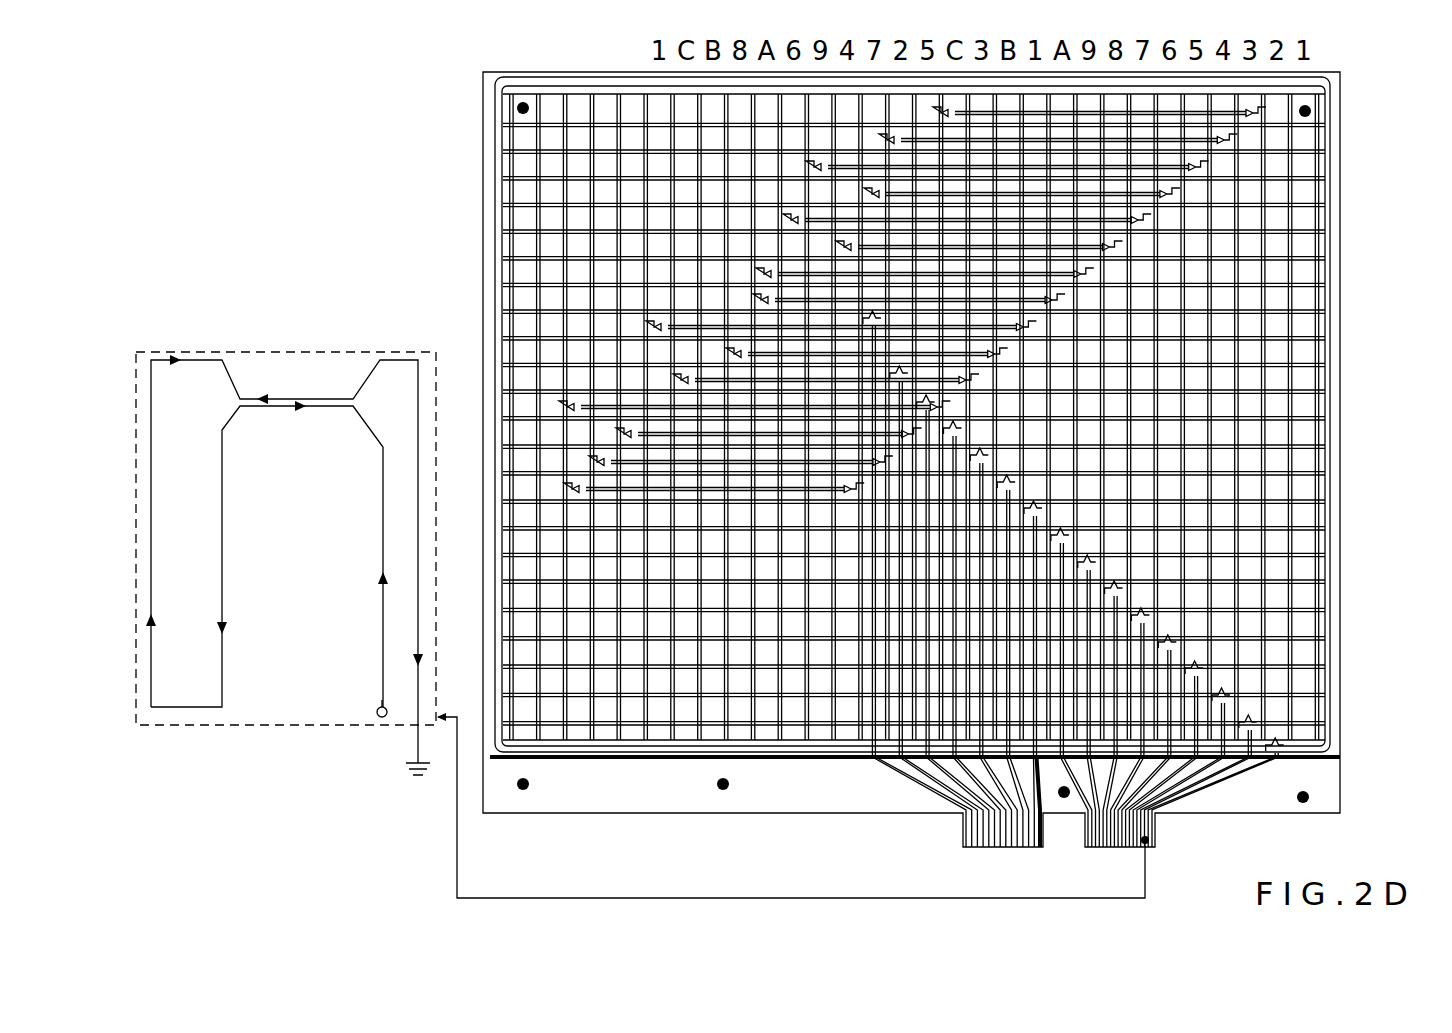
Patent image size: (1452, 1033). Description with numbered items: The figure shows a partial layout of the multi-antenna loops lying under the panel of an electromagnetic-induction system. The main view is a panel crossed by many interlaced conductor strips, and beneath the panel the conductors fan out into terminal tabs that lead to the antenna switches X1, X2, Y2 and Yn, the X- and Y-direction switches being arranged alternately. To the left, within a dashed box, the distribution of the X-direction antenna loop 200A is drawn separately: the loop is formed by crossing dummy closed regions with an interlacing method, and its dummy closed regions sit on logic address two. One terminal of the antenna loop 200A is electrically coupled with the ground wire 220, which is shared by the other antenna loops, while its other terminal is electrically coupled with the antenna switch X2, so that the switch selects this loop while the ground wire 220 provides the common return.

The antenna loop 200A is at (383, 542).
The ground wire 220 is at (595, 757).
The antenna switch X1 is at (1151, 849).
The antenna switch X2 is at (497, 795).
The antenna switch Yn is at (1090, 848).
The antenna switch Y2 is at (1143, 847).